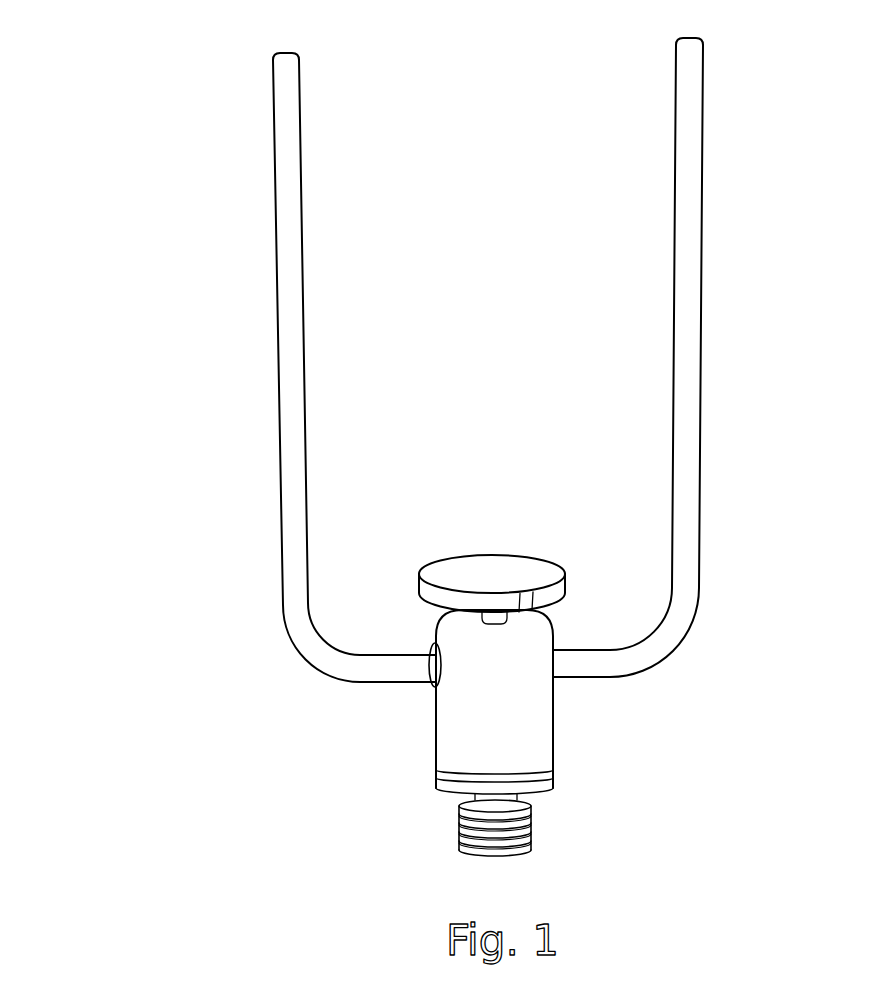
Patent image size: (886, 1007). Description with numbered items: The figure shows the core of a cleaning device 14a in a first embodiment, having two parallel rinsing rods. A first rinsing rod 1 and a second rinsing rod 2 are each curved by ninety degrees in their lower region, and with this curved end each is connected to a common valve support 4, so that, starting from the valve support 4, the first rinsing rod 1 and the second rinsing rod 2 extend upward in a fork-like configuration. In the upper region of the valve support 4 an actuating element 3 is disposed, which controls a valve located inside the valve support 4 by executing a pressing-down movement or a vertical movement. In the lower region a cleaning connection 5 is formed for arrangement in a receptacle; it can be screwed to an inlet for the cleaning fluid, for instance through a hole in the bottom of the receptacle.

The cleaning device 14a is at (157, 58).
The first rinsing rod 1 is at (695, 100).
The second rinsing rod 2 is at (272, 258).
The actuating element 3 is at (491, 565).
The valve support 4 is at (534, 719).
The cleaning connection 5 is at (532, 834).